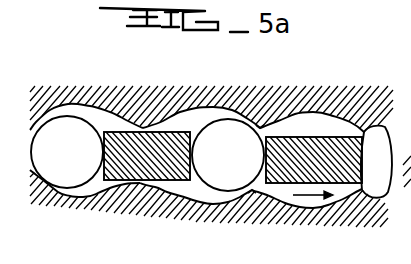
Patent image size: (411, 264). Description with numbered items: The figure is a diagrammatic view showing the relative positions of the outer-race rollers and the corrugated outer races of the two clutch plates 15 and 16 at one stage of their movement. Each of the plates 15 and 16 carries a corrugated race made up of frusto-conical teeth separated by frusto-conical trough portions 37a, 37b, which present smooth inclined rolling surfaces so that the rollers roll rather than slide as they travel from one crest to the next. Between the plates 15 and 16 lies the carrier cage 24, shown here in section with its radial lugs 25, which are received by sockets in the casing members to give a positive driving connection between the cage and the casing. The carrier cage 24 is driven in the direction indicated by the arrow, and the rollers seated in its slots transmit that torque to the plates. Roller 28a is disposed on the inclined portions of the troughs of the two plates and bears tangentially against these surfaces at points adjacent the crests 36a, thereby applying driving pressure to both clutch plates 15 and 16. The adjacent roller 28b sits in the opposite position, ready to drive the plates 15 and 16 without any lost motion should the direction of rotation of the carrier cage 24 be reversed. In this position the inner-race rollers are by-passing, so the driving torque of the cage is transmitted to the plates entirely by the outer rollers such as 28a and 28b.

The clutch plate 15 is at (230, 217).
The clutch plate 16 is at (334, 106).
The carrier cage 24 is at (308, 155).
The radial lug 25 is at (160, 168).
The roller 28a is at (228, 155).
The roller 28b is at (83, 105).
The crest 36a is at (252, 191).
The trough portion 37a is at (212, 104).
The trough portion 37b is at (112, 200).